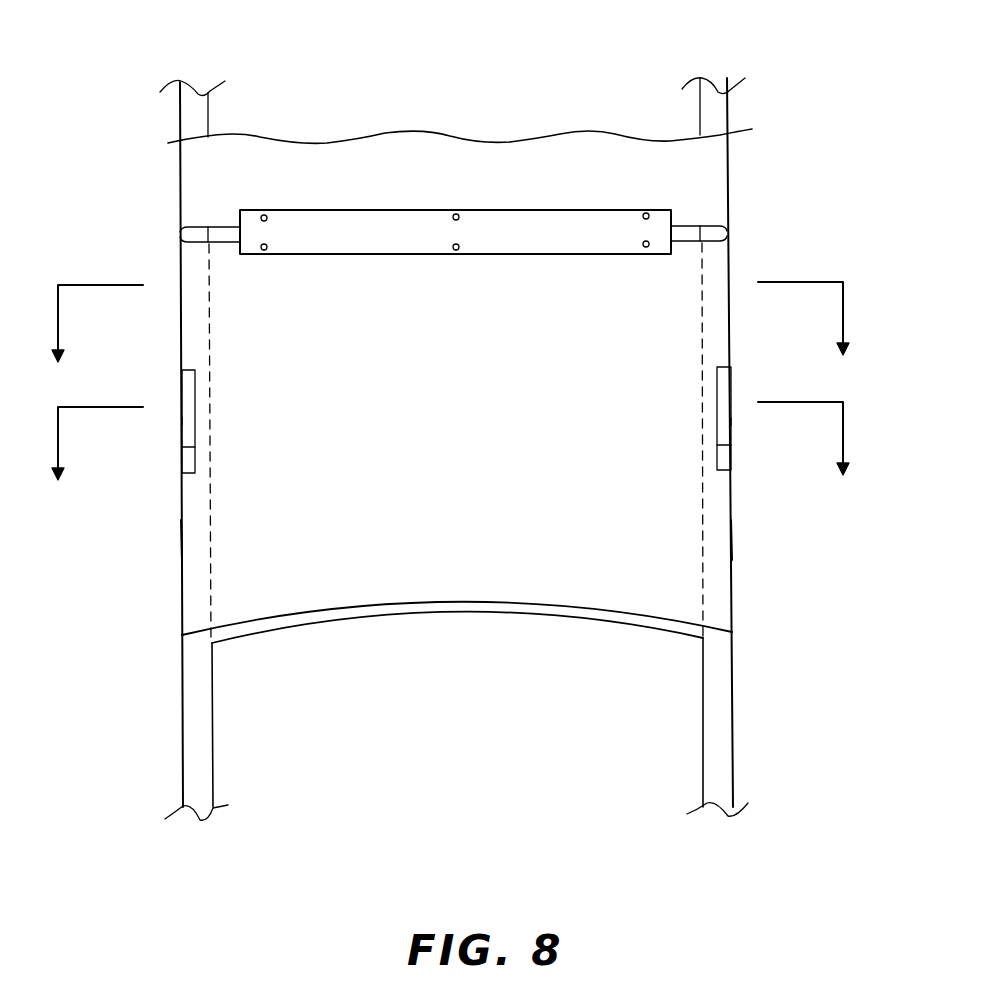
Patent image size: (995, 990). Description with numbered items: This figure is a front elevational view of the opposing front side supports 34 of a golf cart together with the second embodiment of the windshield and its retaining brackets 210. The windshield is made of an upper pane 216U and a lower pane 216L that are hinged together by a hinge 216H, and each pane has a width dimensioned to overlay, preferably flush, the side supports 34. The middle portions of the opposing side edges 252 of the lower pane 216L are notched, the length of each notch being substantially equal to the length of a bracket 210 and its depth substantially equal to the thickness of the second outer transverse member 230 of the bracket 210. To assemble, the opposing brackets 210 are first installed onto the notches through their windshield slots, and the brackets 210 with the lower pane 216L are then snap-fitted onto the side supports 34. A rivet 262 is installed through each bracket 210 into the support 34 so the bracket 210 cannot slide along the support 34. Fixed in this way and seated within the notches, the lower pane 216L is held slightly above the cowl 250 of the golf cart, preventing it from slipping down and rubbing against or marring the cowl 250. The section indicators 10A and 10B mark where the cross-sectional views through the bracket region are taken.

The side support 34 is at (177, 120).
The upper pane 216U is at (460, 185).
The hinge 216H is at (383, 254).
The lower pane 216L is at (456, 442).
The second outer transverse member 230 is at (181, 389).
The rivet 262 is at (180, 421).
The bracket 210 is at (185, 450).
The side edge 252 is at (182, 540).
The cowl 250 is at (457, 704).
The section line 10A is at (463, 460).
The section line 10B is at (463, 338).